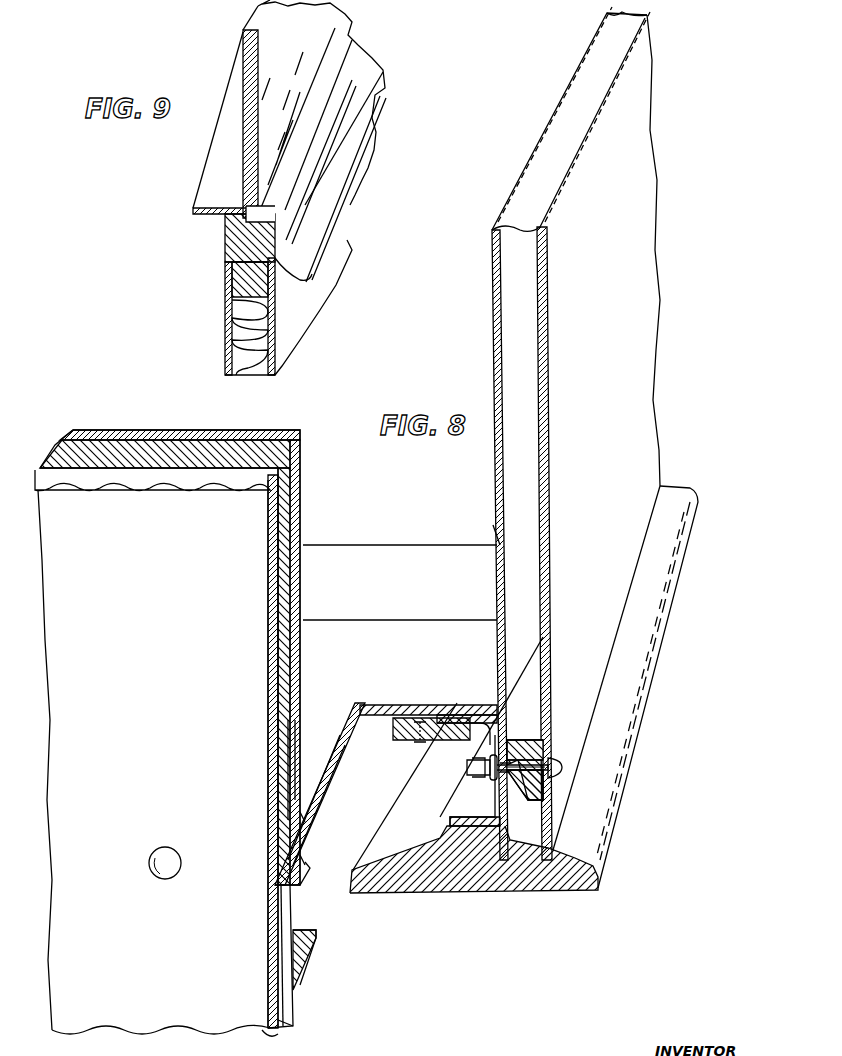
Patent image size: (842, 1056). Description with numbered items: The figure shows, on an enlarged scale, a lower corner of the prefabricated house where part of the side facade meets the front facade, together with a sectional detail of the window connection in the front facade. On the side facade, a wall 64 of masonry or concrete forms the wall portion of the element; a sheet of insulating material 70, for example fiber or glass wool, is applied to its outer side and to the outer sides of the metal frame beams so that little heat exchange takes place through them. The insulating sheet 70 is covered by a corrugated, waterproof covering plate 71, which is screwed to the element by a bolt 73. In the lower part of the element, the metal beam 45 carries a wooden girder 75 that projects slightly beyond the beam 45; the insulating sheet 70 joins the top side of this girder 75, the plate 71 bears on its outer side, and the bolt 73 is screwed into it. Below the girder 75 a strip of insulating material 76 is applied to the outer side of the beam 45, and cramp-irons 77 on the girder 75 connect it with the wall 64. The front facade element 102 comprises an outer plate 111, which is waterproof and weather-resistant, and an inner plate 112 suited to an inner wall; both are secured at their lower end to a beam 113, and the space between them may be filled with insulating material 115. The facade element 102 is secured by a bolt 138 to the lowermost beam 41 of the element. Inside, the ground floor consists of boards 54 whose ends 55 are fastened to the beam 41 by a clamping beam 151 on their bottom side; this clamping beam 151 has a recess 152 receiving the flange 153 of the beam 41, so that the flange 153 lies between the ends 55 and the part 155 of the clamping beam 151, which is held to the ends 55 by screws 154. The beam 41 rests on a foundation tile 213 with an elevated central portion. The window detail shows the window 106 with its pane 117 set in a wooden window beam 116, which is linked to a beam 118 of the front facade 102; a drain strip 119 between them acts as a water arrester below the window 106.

In FIG. 9, the window 106 is at (248, 58).
In FIG. 9, the pane 117 is at (262, 128).
In FIG. 9, the wooden window beam 116 is at (228, 224).
In FIG. 9, the drain strip 119 is at (328, 240).
In FIG. 9, the beam of the front facade 118 is at (232, 284).
In FIG. 9, the inner plate 112 is at (230, 352).
In FIG. 8, the inner plate 112 is at (494, 316).
In FIG. 9, the outer plate 111 is at (272, 335).
In FIG. 8, the outer plate 111 is at (543, 362).
In FIG. 9, the insulating material 115 is at (256, 376).
In FIG. 8, the facade element 102 is at (616, 446).
In FIG. 8, the tile 213 is at (505, 892).
In FIG. 8, the screw 154 is at (420, 745).
In FIG. 8, the board 54 is at (388, 548).
In FIG. 8, the end of board 55 is at (493, 650).
In FIG. 8, the recess 152 is at (442, 704).
In FIG. 8, the flange 153 is at (470, 712).
In FIG. 8, the part of clamping beam 155 is at (474, 732).
In FIG. 8, the clamping beam 151 is at (396, 730).
In FIG. 8, the lowermost beam 41 is at (446, 822).
In FIG. 8, the beam 113 is at (540, 748).
In FIG. 8, the bolt 138 is at (560, 770).
In FIG. 8, the sheet of insulating material 70 is at (272, 600).
In FIG. 8, the wall 64 is at (288, 655).
In FIG. 8, the cramp-iron 77 is at (298, 742).
In FIG. 8, the wooden girder 75 is at (298, 868).
In FIG. 8, the bolt 73 is at (158, 882).
In FIG. 8, the beam 45 is at (306, 962).
In FIG. 8, the strip of insulating material 76 is at (283, 1026).
In FIG. 8, the covering plate 71 is at (268, 1034).